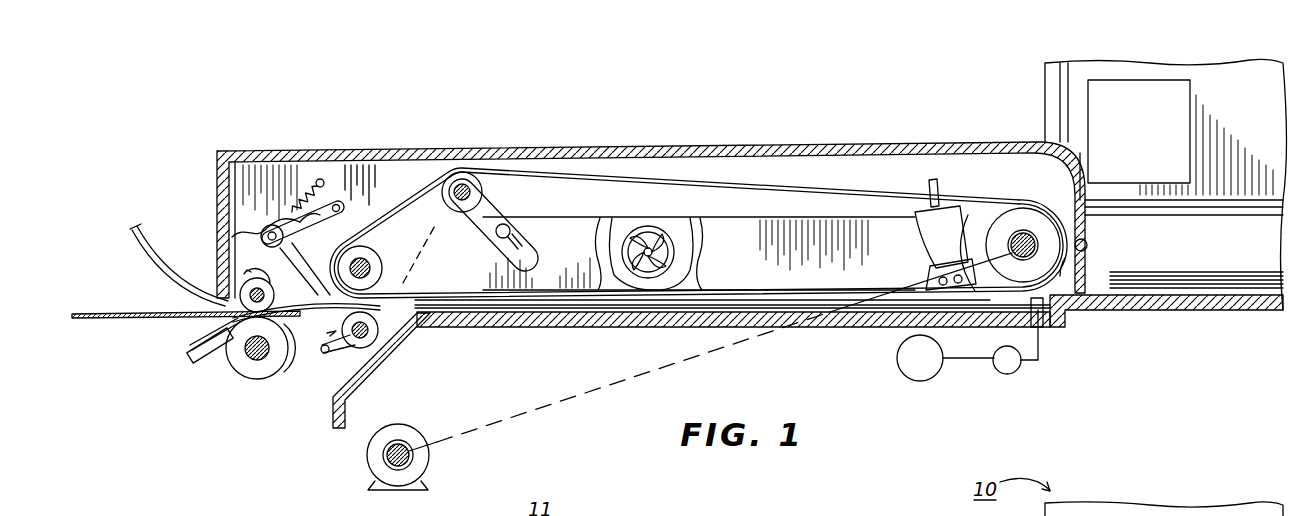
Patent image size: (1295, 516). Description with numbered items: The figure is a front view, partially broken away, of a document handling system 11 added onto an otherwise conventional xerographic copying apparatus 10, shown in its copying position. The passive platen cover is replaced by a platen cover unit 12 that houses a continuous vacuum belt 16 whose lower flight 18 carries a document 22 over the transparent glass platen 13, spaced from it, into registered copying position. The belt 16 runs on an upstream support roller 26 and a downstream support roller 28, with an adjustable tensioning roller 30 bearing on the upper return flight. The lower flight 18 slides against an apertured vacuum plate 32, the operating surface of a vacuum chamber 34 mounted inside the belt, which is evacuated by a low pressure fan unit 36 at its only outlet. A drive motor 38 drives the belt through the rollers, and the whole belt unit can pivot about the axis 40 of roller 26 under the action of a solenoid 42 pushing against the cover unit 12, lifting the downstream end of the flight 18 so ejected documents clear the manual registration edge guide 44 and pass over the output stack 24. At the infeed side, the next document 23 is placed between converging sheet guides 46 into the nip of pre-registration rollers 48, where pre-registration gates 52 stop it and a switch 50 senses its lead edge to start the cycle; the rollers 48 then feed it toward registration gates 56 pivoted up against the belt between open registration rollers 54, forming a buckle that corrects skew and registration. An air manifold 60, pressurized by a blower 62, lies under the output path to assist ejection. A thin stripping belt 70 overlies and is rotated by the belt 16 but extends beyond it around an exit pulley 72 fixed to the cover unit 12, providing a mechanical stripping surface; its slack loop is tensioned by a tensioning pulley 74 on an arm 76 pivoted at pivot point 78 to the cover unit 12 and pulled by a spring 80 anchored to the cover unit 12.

The copying apparatus 10 is at (1055, 57).
The document handling system 11 is at (418, 125).
The platen cover unit 12 is at (668, 149).
The transparent glass platen 13 is at (523, 328).
The vacuum belt 16 is at (827, 192).
The document transporting lower flight 18 is at (635, 303).
The document 22 is at (588, 309).
The next document 23 is at (97, 313).
The document output stack 24 is at (1204, 268).
The upstream support roller 26 is at (358, 240).
The downstream support roller 28 is at (1044, 214).
The tensioning roller 30 is at (481, 182).
The vacuum plate 32 is at (733, 291).
The vacuum chamber 34 is at (607, 232).
The fan unit 36 is at (656, 246).
The drive motor 38 is at (415, 430).
The axis 40 is at (373, 259).
The solenoid 42 is at (955, 207).
The manual registration edge guide 44 is at (982, 327).
The sheet guides 46 is at (146, 316).
The pre-registration rollers 48 is at (227, 279).
The switch 50 is at (193, 363).
The pre-registration gates 52 is at (292, 368).
The registration rollers 54 is at (397, 349).
The registration gates 56 is at (349, 352).
The air manifold 60 is at (1031, 326).
The blower 62 is at (900, 360).
The stripping belt 70 is at (1087, 272).
The exit pulley 72 is at (1088, 246).
The tensioning pulley 74 is at (256, 233).
The arm 76 is at (303, 223).
The pivot point 78 is at (337, 204).
The spring 80 is at (298, 178).